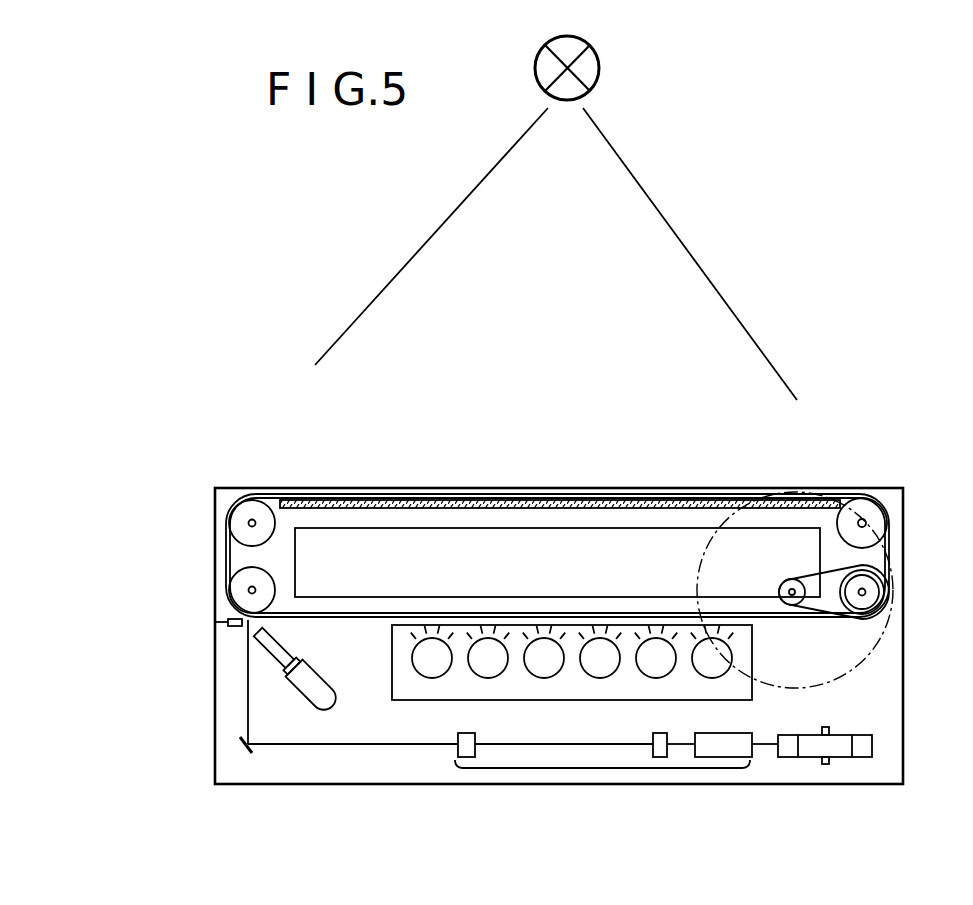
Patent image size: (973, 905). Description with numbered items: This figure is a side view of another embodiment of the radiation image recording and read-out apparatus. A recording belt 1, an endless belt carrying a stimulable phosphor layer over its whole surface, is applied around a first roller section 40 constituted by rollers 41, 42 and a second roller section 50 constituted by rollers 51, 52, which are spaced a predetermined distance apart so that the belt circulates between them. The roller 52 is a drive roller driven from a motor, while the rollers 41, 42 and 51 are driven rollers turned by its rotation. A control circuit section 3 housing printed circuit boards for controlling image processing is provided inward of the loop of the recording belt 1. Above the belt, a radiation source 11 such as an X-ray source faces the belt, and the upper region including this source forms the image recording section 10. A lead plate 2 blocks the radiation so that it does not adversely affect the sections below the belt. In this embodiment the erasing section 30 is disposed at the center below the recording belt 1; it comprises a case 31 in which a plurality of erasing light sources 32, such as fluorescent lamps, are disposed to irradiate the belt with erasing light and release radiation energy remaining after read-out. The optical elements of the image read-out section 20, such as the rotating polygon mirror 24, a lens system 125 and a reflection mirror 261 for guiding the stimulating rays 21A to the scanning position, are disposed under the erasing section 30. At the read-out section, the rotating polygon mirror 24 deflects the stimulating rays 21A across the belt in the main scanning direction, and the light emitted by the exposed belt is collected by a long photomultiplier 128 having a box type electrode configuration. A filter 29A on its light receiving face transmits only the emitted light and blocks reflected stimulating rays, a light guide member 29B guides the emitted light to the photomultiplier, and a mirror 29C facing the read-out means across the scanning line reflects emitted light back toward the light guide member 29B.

The recording belt 1 is at (486, 492).
The lead plate 2 is at (553, 498).
The control circuit section 3 is at (560, 570).
The image recording section 10 is at (420, 215).
The radiation source 11 is at (605, 72).
The image read-out section 20 is at (276, 763).
The stimulating rays 21A is at (768, 748).
The rotating polygon mirror 24 is at (840, 750).
The filter 29A is at (297, 652).
The light guide member 29B is at (272, 652).
The mirror 29C is at (228, 623).
The erasing section 30 is at (579, 677).
The case 31 is at (757, 692).
The erasing light source 32 is at (422, 655).
The first roller section 40 is at (216, 561).
The roller 41 is at (240, 520).
The roller 42 is at (240, 597).
The second roller section 50 is at (827, 568).
The roller 51 is at (863, 506).
The drive roller 52 is at (896, 596).
The lens system 125 is at (565, 768).
The long photomultiplier 128 is at (332, 702).
The switch 261 is at (238, 741).